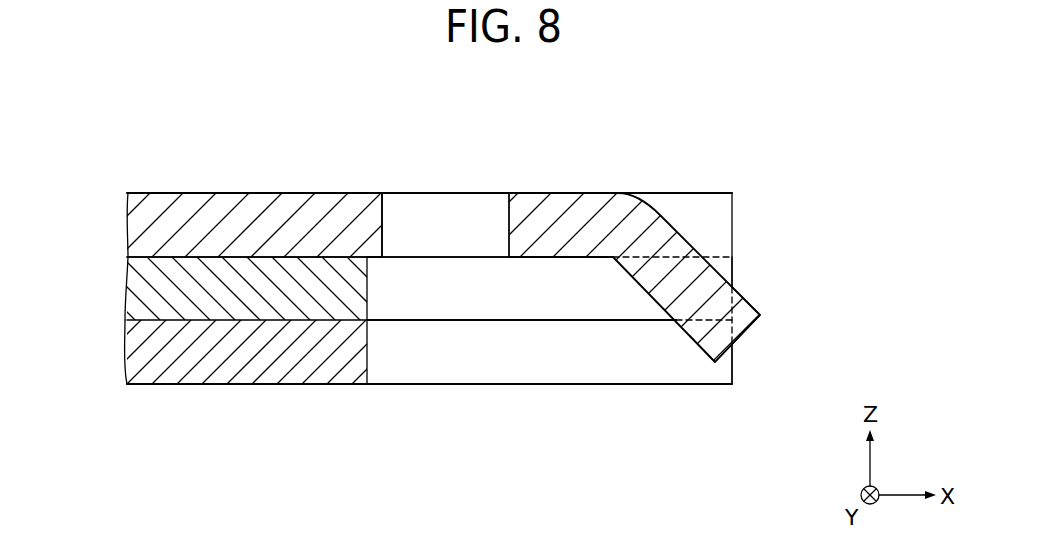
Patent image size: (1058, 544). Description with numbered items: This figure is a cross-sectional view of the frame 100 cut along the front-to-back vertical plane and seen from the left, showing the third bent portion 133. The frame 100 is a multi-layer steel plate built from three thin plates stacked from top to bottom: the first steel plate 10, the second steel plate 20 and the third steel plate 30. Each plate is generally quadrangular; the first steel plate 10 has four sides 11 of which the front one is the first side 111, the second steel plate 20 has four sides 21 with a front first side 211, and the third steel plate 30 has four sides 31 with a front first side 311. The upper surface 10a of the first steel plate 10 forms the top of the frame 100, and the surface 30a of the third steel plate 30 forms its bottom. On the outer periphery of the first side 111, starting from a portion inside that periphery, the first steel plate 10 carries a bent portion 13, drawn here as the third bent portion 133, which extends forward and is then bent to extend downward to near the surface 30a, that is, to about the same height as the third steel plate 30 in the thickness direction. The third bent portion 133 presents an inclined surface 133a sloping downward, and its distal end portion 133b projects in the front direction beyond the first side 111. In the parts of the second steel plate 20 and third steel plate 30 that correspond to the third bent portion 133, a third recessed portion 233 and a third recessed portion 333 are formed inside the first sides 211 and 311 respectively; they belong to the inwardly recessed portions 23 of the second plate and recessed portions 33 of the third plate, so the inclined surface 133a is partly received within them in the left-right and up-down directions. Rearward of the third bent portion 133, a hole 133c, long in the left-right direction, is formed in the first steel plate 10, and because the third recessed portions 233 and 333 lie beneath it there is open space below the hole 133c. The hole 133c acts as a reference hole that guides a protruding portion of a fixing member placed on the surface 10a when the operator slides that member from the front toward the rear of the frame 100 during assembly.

The frame 100 is at (852, 71).
The first steel plate 10 is at (390, 194).
The surface of the first steel plate 10a is at (260, 193).
The four sides 11 is at (466, 257).
The first side 111 is at (732, 203).
The third member 13 is at (617, 246).
The third bent portion 133 is at (617, 246).
The inclined surface 133a is at (732, 237).
The distal end portion 133b is at (762, 315).
The hole 133c is at (395, 208).
The second steel plate 20 is at (128, 278).
The four sides 21 is at (466, 366).
The first side 211 is at (732, 273).
The recessed portions 23 is at (521, 366).
The third recessed portion 233 is at (525, 302).
The third steel plate 30 is at (389, 386).
The surface of the third steel plate 30a is at (258, 385).
The four sides 31 is at (466, 398).
The first side 311 is at (732, 357).
The recessed portions 33 is at (549, 398).
The third recessed portion 333 is at (443, 357).